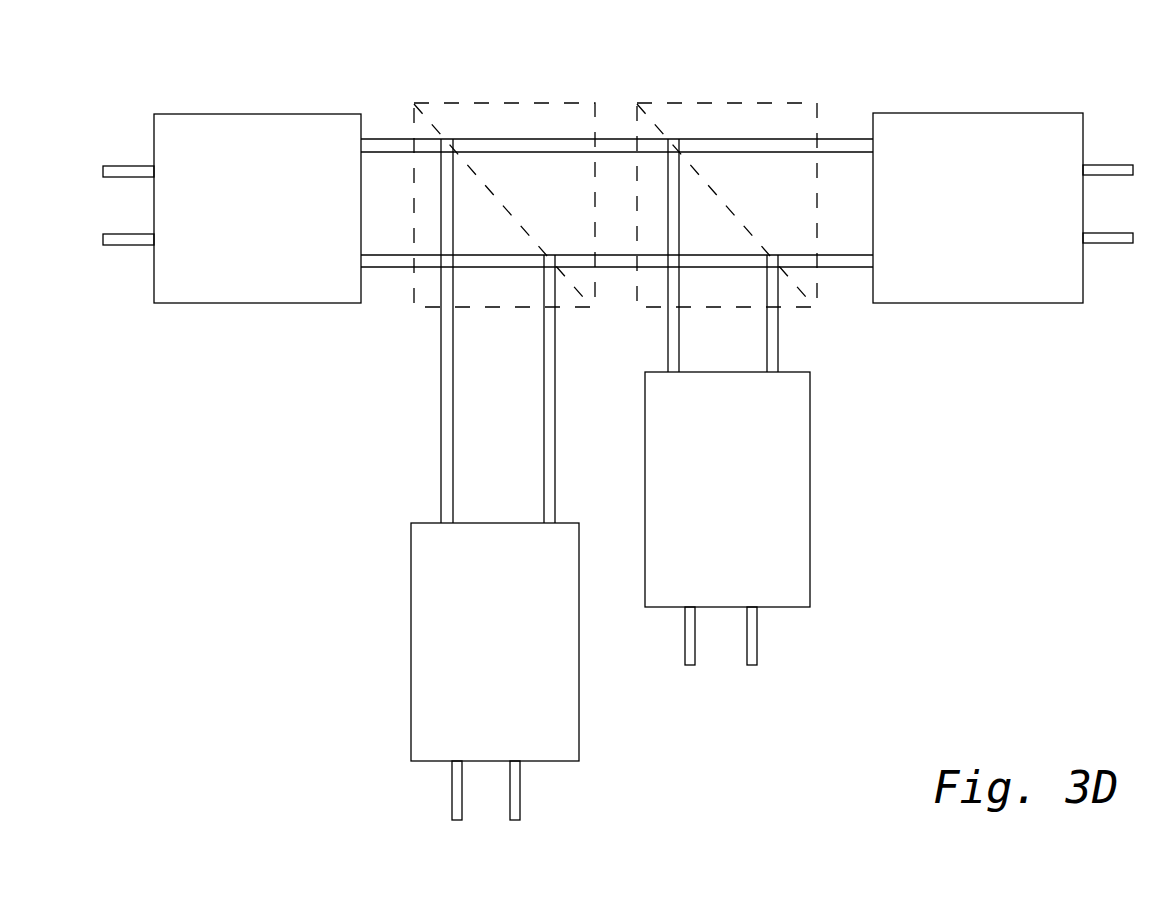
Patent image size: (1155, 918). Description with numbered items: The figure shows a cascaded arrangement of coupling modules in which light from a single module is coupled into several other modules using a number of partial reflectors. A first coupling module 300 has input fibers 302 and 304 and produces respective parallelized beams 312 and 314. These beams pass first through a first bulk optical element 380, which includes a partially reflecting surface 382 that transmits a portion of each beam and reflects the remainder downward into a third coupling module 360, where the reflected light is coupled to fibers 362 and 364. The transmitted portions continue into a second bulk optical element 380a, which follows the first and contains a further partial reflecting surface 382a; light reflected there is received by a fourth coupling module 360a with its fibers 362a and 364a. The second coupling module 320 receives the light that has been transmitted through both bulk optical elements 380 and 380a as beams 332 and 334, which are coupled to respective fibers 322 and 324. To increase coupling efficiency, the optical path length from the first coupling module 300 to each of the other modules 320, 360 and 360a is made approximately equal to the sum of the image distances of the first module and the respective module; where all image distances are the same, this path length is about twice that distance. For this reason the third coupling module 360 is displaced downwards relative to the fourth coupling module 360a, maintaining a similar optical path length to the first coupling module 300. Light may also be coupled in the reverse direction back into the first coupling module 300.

The first coupling module 300 is at (206, 299).
The input fiber 302 is at (133, 163).
The input fiber 304 is at (118, 247).
The parallelized beam 312 is at (382, 270).
The parallelized beam 314 is at (383, 137).
The second coupling module 320 is at (931, 293).
The fiber 322 is at (1103, 162).
The fiber 324 is at (1113, 247).
The transmitted beam 332 is at (842, 269).
The transmitted beam 334 is at (840, 137).
The third coupling module 360 is at (556, 745).
The fiber 362 is at (450, 782).
The fiber 364 is at (521, 782).
The fourth coupling module 360a is at (800, 593).
The fiber 362a is at (685, 640).
The fiber 364a is at (757, 628).
The first bulk optical element 380 is at (555, 100).
The partially reflecting surface 382 is at (498, 180).
The second bulk optical element 380a is at (743, 100).
The partial reflecting surface 382a is at (721, 180).